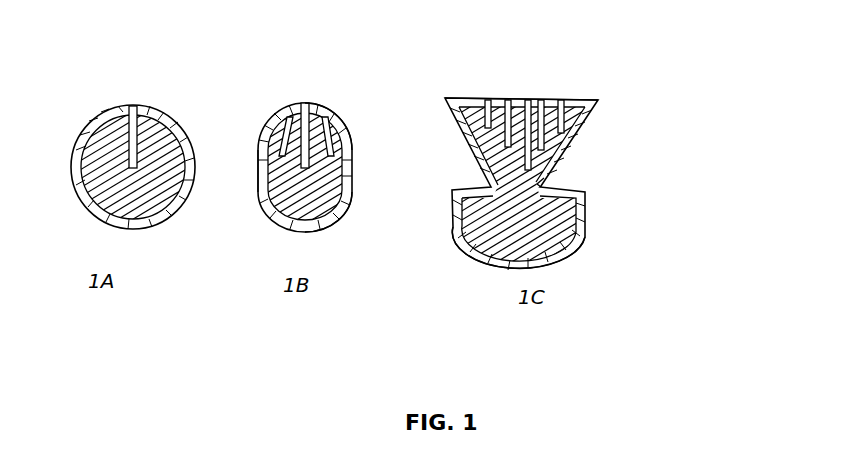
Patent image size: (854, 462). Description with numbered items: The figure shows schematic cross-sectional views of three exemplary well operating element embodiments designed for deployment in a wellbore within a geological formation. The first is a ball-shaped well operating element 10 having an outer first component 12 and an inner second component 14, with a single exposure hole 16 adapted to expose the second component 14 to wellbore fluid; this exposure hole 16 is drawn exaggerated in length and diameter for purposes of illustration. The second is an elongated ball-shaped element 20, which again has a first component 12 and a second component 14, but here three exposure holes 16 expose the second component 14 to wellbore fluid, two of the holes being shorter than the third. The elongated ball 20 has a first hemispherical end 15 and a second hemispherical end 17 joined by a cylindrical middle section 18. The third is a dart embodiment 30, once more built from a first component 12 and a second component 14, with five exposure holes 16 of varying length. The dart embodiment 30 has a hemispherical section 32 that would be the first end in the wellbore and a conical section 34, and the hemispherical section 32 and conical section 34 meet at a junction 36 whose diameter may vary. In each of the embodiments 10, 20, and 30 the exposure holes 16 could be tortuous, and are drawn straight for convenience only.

The ball-shaped well operating element 10 is at (144, 72).
The first component 12 is at (177, 119).
The second component 14 is at (168, 182).
The first hemispherical end 15 is at (341, 118).
The exposure hole 16 is at (131, 106).
The second hemispherical end 17 is at (334, 221).
The cylindrical middle section 18 is at (261, 172).
The elongated ball-shaped element 20 is at (321, 57).
The dart embodiment 30 is at (641, 55).
The hemispherical section 32 is at (570, 250).
The conical section 34 is at (600, 113).
The junction 36 is at (565, 180).